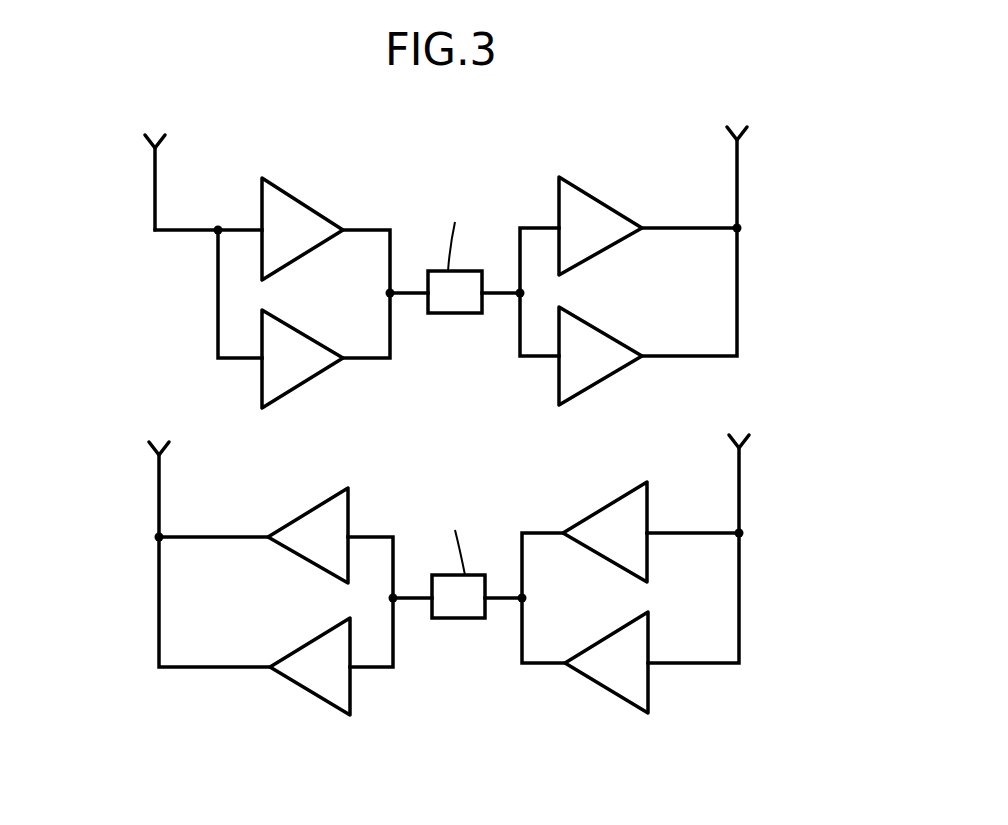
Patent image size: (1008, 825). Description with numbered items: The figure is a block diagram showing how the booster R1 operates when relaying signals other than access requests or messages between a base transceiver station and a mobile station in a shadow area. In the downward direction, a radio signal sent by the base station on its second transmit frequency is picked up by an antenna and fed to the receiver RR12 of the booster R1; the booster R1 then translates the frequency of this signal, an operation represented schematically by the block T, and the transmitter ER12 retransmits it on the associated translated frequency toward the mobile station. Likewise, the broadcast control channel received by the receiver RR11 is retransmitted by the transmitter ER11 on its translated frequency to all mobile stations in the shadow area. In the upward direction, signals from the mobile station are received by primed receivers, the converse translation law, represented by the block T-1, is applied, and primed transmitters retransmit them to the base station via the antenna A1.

The antenna A1 is at (140, 135).
The receiver RR12 is at (303, 203).
The receiver RR11 is at (292, 392).
The transmitter ER12 is at (585, 193).
The transmitter ER11 is at (600, 382).
The frequency translation block T is at (446, 313).
The booster R1 is at (768, 382).
The converse frequency translation block T-1 is at (455, 618).